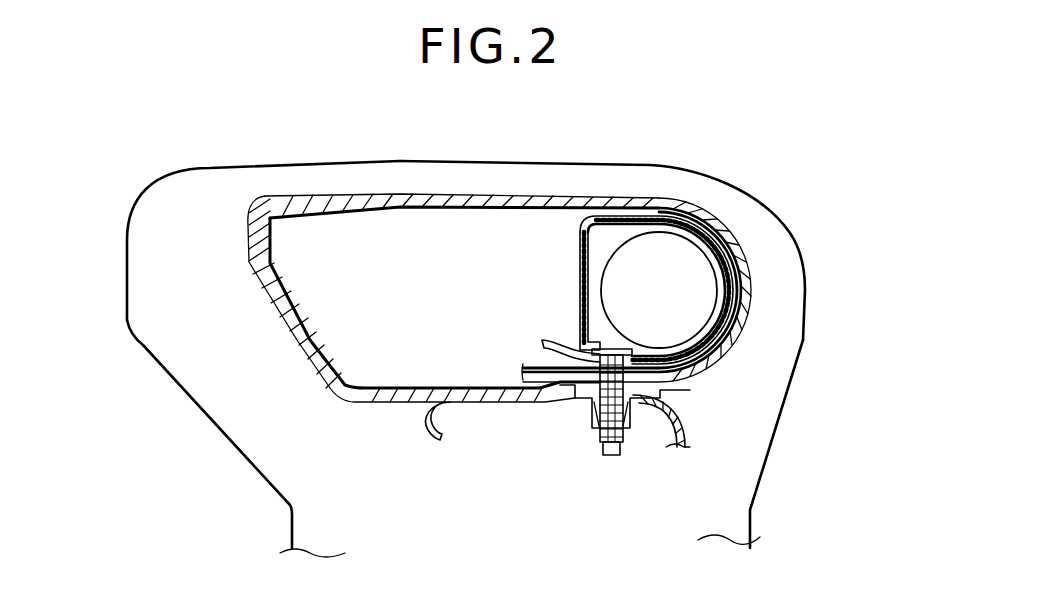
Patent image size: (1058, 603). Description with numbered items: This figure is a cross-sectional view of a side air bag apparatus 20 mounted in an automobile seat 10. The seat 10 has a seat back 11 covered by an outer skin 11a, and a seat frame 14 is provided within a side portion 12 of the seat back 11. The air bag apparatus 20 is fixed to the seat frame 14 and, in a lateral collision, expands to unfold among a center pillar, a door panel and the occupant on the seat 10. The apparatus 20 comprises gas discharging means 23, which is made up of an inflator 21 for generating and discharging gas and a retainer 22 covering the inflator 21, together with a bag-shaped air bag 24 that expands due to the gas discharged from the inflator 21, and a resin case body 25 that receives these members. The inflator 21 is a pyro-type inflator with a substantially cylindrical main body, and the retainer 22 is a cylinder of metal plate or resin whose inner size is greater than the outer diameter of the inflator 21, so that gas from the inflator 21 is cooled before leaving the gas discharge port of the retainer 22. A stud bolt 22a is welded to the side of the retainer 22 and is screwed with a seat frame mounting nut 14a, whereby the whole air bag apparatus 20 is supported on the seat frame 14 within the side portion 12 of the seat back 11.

The seat 10 is at (774, 462).
The seat back 11 is at (292, 530).
The outer skin 11a is at (247, 167).
The side portion 12 is at (645, 165).
The seat frame 14 is at (481, 405).
The seat frame mounting nut 14a is at (634, 428).
The air bag apparatus 20 is at (588, 203).
The inflator 21 is at (705, 217).
The retainer 22 is at (712, 235).
The stud bolt 22a is at (595, 428).
The gas discharging means 23 is at (694, 268).
The air bag 24 is at (535, 213).
The case body 25 is at (750, 268).